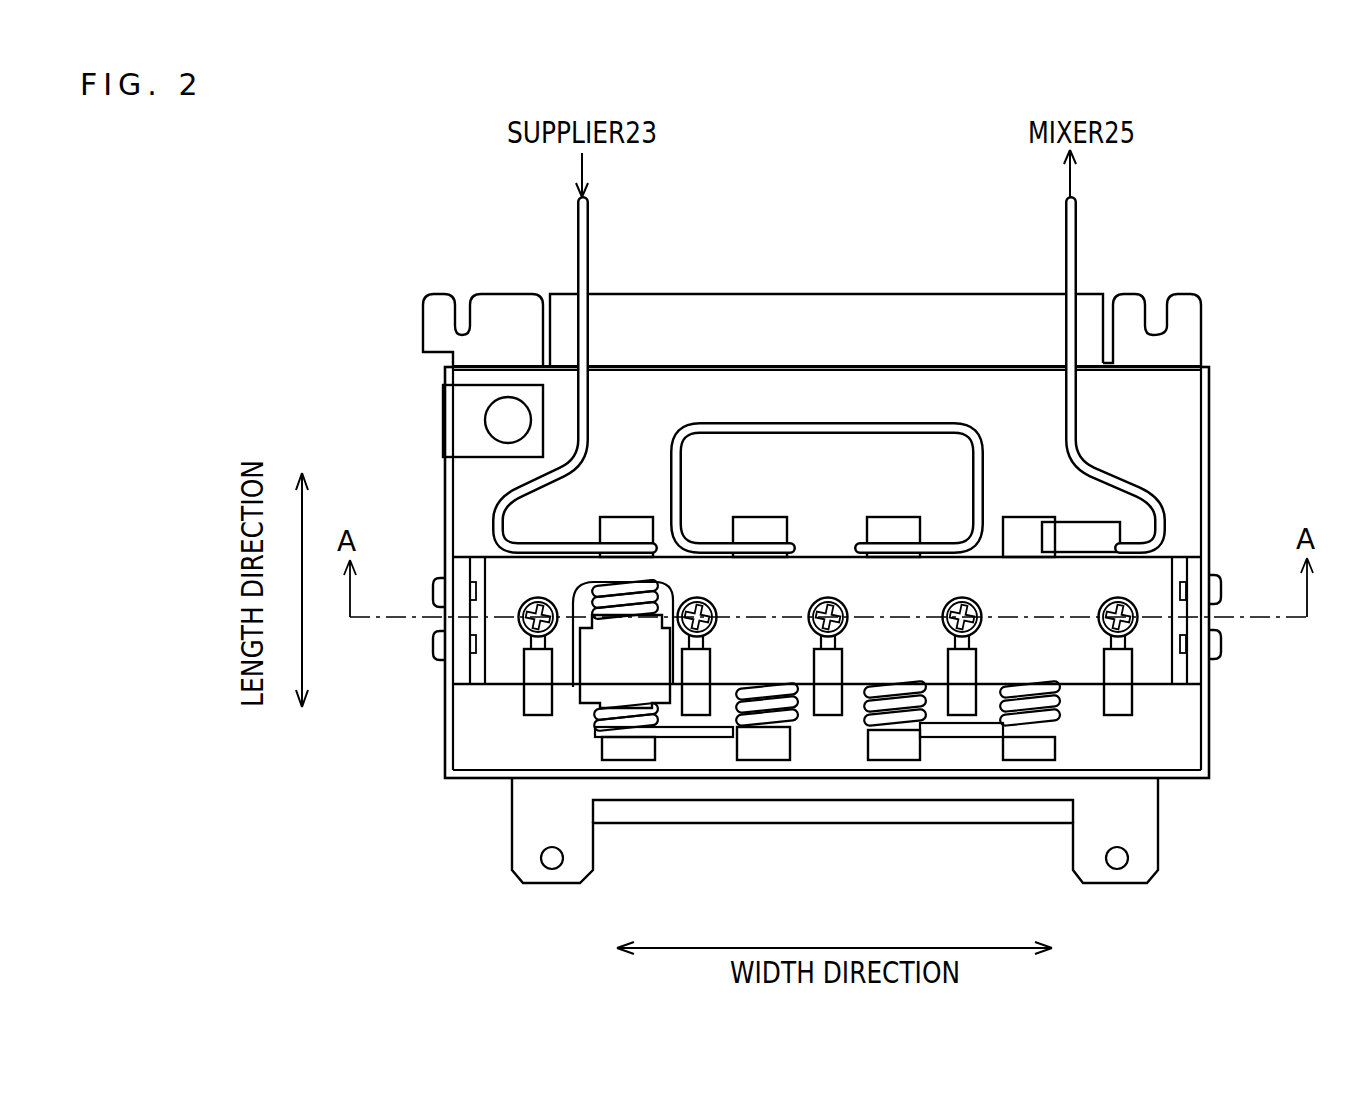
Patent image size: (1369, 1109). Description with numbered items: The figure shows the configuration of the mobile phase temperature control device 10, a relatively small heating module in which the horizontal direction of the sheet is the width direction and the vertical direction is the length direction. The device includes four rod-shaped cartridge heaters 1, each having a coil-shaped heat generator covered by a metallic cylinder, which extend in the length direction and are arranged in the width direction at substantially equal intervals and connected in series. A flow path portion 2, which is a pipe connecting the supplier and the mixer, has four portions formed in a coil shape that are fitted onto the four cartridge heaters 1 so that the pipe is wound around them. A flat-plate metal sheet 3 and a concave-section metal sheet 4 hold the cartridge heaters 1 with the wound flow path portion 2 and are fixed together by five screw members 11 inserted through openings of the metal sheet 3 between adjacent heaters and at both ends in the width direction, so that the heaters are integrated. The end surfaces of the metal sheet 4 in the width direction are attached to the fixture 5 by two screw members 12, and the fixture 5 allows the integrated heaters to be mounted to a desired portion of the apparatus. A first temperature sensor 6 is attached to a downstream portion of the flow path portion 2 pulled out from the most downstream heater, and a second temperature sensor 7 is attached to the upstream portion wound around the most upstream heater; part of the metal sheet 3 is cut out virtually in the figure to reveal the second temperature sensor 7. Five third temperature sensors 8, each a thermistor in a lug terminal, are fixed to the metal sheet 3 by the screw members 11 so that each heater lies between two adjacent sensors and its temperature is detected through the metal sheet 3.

The cartridge heater 1 is at (1029, 528).
The flow path portion 2 is at (827, 428).
The metal sheet 3 is at (1153, 673).
The metal sheet 4 is at (1178, 558).
The fixture 5 is at (1178, 455).
The first temperature sensor 6 is at (1081, 538).
The second temperature sensor 7 is at (583, 695).
The third temperature sensor 8 is at (538, 703).
The mobile phase temperature control device 10 is at (1262, 161).
The screw member 11 is at (518, 612).
The screw member 12 is at (1250, 640).